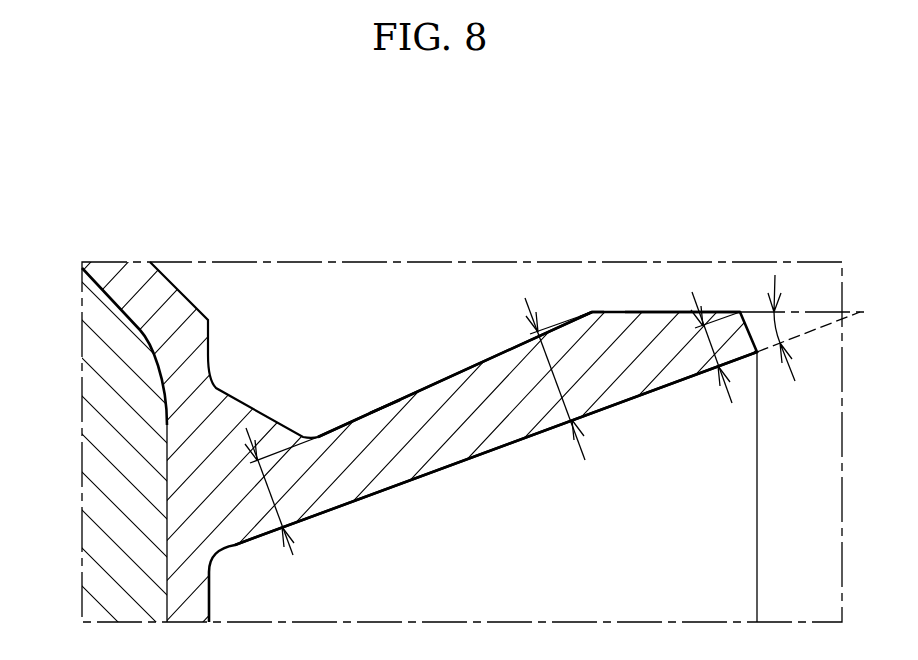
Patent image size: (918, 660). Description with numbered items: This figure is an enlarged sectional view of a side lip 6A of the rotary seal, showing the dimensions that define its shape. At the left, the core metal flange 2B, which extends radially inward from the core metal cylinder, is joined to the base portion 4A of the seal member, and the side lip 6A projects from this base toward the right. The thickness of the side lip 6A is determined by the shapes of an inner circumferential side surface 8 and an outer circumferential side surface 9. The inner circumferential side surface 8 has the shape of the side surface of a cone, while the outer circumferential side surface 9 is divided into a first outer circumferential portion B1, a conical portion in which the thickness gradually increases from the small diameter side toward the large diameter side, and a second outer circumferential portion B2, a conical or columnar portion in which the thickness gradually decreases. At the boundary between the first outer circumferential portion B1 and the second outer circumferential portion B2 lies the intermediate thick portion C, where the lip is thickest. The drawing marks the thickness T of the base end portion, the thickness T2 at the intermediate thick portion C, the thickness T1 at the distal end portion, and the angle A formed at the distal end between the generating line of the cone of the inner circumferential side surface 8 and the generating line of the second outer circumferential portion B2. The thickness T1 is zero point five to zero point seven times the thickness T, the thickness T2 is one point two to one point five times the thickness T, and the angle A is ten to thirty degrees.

The core metal flange 2B is at (90, 452).
The base portion 4A is at (172, 286).
The side lip 6A is at (428, 350).
The inner circumferential side surface 8 is at (496, 450).
The outer circumferential side surface 9 is at (481, 362).
The first outer circumferential portion B1 is at (378, 386).
The second outer circumferential portion B2 is at (633, 294).
The intermediate thick portion C is at (597, 293).
The thickness of the base end portion T is at (270, 490).
The thickness of the distal end portion T1 is at (713, 351).
The thickness of the intermediate thick portion T2 is at (560, 392).
The angle of the distal end portion A is at (774, 333).